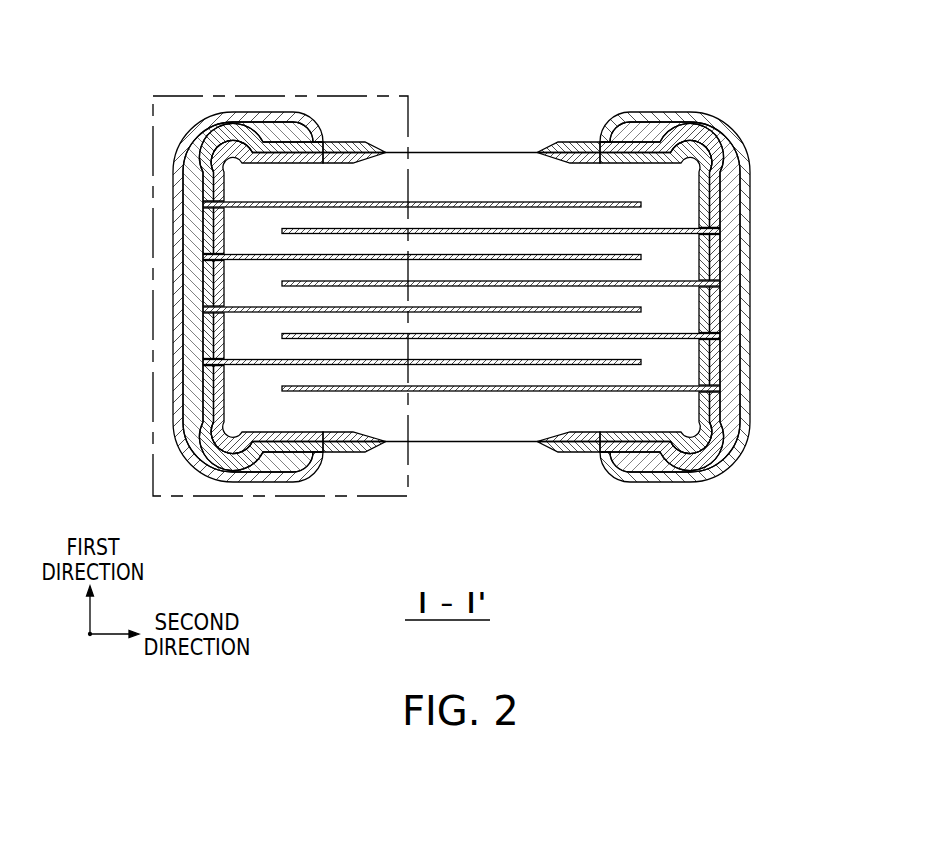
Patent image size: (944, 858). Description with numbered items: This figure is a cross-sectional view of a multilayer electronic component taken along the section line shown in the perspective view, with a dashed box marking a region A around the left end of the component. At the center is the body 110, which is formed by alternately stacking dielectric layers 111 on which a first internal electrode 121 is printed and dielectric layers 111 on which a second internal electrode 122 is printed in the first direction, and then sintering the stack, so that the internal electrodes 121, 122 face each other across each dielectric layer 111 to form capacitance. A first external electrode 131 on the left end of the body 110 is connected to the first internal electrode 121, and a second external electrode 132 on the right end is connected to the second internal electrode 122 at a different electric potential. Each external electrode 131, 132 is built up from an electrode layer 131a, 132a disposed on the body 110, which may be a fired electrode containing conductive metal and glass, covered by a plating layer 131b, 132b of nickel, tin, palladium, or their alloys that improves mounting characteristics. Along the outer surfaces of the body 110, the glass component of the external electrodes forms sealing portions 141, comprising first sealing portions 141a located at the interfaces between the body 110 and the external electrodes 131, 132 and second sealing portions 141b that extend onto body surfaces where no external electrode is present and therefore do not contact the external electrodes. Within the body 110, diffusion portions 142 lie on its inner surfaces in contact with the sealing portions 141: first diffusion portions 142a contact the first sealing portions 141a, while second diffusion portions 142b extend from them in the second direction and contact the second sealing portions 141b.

The body 110 is at (386, 151).
The dielectric layer 111 is at (442, 220).
The first internal electrode 121 is at (478, 204).
The second internal electrode 122 is at (505, 230).
The first external electrode 131 is at (178, 297).
The electrode layer 131a is at (188, 320).
The plating layer 131b is at (173, 282).
The second external electrode 132 is at (744, 297).
The electrode layer 132a is at (735, 320).
The plating layer 132b is at (750, 282).
The sealing portion 141 is at (461, 243).
The first sealing portion 141a is at (272, 143).
The second sealing portion 141b is at (323, 142).
The diffusion portion 142 is at (460, 296).
The first diffusion portion 142a is at (252, 170).
The second diffusion portion 142b is at (340, 163).
The enlarged region A is at (152, 380).